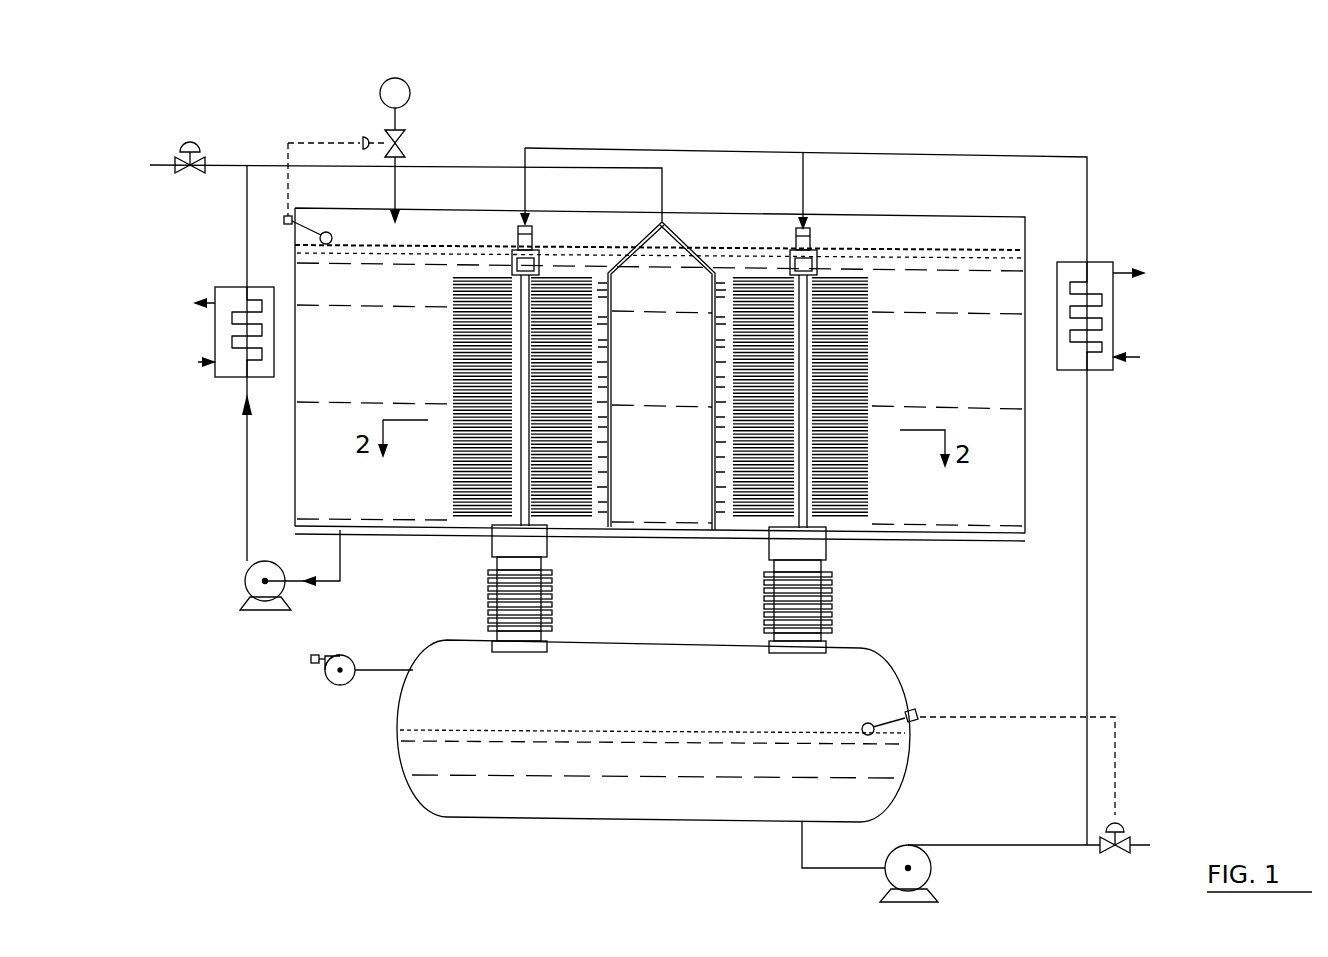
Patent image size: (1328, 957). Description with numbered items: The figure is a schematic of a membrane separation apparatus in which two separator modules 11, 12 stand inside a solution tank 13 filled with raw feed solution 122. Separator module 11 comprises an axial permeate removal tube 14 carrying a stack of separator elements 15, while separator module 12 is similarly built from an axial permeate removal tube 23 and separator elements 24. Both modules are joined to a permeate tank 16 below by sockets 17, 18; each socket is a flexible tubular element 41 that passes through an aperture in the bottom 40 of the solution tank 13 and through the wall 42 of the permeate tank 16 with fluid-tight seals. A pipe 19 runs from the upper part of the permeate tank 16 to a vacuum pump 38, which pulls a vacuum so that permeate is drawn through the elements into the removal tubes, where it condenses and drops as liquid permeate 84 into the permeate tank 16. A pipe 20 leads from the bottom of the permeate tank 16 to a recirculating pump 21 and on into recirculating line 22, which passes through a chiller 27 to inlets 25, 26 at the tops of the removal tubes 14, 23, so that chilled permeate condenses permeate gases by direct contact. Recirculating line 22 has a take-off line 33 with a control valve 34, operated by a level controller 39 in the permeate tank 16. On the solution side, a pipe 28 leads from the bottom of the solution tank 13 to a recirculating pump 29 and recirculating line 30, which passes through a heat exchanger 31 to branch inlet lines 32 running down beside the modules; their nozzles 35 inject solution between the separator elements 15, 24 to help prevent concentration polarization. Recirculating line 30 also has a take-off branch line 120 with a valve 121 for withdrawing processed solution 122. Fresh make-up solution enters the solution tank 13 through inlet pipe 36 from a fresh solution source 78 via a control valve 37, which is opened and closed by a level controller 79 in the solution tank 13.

The separator module 11 is at (895, 373).
The separator module 12 is at (430, 374).
The solution tank 13 is at (955, 217).
The axial permeate removal tube 14 is at (813, 297).
The separator elements 15 is at (868, 306).
The permeate tank 16 is at (625, 643).
The socket 17 is at (820, 556).
The socket 18 is at (547, 556).
The pipe 19 is at (390, 670).
The pipe 20 is at (843, 867).
The recirculating pump 21 is at (930, 882).
The recirculating line 22 is at (857, 150).
The axial permeate removal tube 23 is at (545, 288).
The separator elements 24 is at (452, 318).
The inlet 25 is at (815, 229).
The inlet 26 is at (535, 226).
The chiller 27 is at (1105, 326).
The pipe 28 is at (342, 575).
The recirculating pump 29 is at (245, 581).
The recirculating line 30 is at (272, 166).
The heat exchanger 31 is at (232, 290).
The branch inlet lines 32 is at (605, 352).
The take-off line 33 is at (1091, 850).
The control valve 34 is at (1124, 828).
The nozzles 35 is at (604, 407).
The make-up solution inlet pipe 36 is at (402, 214).
The control valve 37 is at (405, 142).
The vacuum pump 38 is at (327, 685).
The level controller 39 is at (889, 722).
The bottom 40 is at (1000, 541).
The flexible tubular element 41 is at (764, 602).
The wall 42 is at (838, 645).
The fresh solution source 78 is at (405, 82).
The level controller 79 is at (325, 231).
The liquid permeate 84 is at (625, 798).
The take-off branch line 120 is at (233, 165).
The valve 121 is at (188, 140).
The solution 122 is at (382, 294).